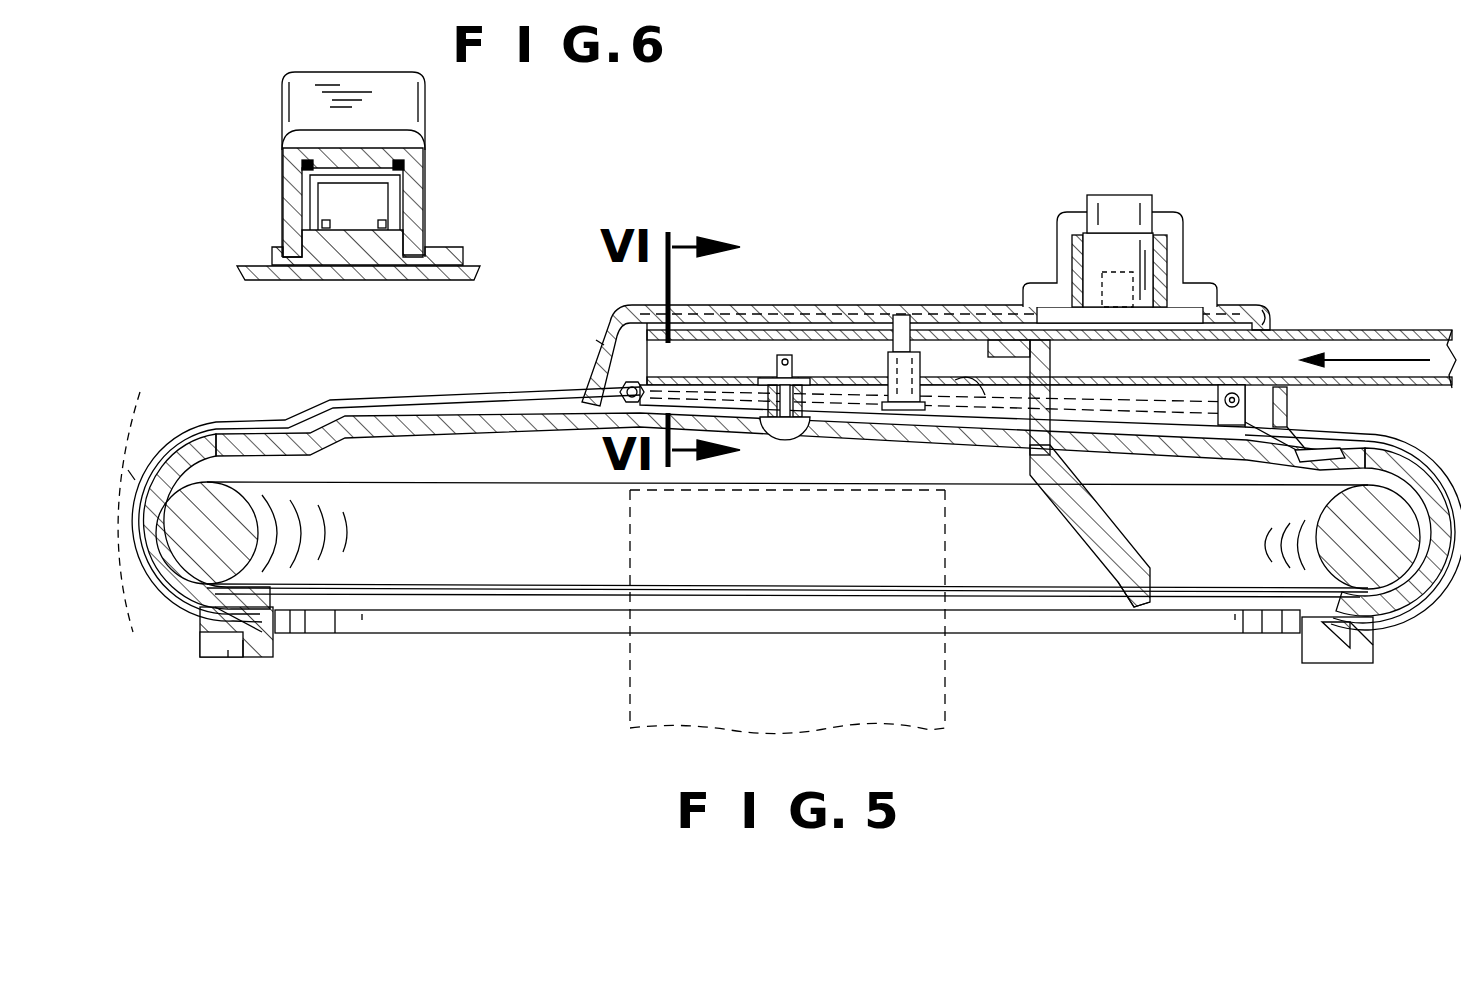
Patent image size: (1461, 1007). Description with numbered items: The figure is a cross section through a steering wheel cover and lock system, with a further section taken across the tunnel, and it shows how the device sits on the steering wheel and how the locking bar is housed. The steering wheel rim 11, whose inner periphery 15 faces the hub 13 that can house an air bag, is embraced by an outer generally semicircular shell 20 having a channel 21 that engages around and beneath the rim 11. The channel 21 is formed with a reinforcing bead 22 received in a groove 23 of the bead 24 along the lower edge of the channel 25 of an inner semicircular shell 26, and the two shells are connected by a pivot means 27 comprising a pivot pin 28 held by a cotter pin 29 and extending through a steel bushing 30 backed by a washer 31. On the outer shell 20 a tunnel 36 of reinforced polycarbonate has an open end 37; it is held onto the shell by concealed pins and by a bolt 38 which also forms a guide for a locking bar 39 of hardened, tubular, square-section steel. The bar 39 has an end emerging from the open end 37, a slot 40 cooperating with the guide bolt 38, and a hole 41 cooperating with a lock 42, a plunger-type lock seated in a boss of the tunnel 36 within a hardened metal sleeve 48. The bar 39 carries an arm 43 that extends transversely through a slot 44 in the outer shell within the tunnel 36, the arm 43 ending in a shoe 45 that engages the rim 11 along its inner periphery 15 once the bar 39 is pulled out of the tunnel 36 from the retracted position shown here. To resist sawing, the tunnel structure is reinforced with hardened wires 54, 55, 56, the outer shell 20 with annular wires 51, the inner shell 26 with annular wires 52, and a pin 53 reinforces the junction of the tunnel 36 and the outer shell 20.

In FIG. 5, the rim 11 is at (212, 515).
In FIG. 5, the hub 13 is at (950, 728).
In FIG. 5, the inner periphery 15 is at (1387, 552).
In FIG. 5, the outer generally semicircular shell 20 is at (260, 412).
In FIG. 5, the channel 21 is at (185, 625).
In FIG. 5, the reinforcing bead 22 is at (240, 626).
In FIG. 5, the groove 23 is at (228, 652).
In FIG. 5, the bead 24 is at (230, 655).
In FIG. 5, the channel 25 is at (1378, 606).
In FIG. 5, the inner semicircular shell 26 is at (385, 425).
In FIG. 5, the pivot means 27 is at (780, 440).
In FIG. 5, the pivot pin 28 is at (784, 405).
In FIG. 5, the cotter pin 29 is at (800, 380).
In FIG. 5, the steel bushing 30 is at (795, 404).
In FIG. 5, the washer 31 is at (778, 370).
In FIG. 6, the tunnel 36 is at (372, 138).
In FIG. 5, the tunnel 36 is at (770, 303).
In FIG. 5, the open end 37 is at (1272, 330).
In FIG. 5, the bolt 38 is at (900, 335).
In FIG. 6, the locking bar 39 is at (397, 202).
In FIG. 5, the locking bar 39 is at (1337, 332).
In FIG. 5, the slot 40 is at (975, 378).
In FIG. 5, the hole 41 is at (947, 307).
In FIG. 5, the lock 42 is at (1148, 222).
In FIG. 5, the arm 43 is at (1040, 445).
In FIG. 5, the slot 44 is at (1157, 417).
In FIG. 5, the shoe 45 is at (1135, 600).
In FIG. 5, the hardened metal sleeve 48 is at (1166, 260).
In FIG. 5, the annular wires 51 is at (144, 571).
In FIG. 5, the annular wires 52 is at (143, 500).
In FIG. 5, the pin 53 is at (1300, 408).
In FIG. 6, the wire 54 is at (303, 166).
In FIG. 5, the wire 54 is at (660, 288).
In FIG. 6, the wire 55 is at (430, 165).
In FIG. 5, the wire 56 is at (600, 365).